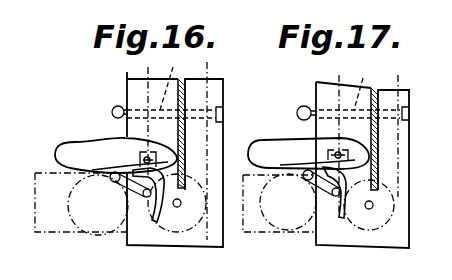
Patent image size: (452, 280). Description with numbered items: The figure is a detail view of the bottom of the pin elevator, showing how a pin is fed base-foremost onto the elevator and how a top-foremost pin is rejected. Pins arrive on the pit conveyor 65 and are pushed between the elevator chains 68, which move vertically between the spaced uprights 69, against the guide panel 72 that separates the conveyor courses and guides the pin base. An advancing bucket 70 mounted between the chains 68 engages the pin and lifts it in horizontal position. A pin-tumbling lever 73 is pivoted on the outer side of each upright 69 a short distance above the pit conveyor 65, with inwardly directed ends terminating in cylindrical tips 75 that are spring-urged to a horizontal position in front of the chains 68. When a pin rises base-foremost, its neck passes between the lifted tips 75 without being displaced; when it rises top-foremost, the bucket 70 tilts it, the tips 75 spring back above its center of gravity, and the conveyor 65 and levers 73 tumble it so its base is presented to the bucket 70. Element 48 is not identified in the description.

In FIG. 16, the pressure shoe 48 is at (118, 139).
In FIG. 17, the pressure shoe 48 is at (283, 138).
In FIG. 16, the pit conveyor chains 65 is at (69, 202).
In FIG. 17, the pit conveyor chains 65 is at (276, 203).
In FIG. 16, the elevator conveyor chains 68 is at (126, 80).
In FIG. 17, the elevator conveyor chains 68 is at (322, 86).
In FIG. 16, the upright members 69 is at (210, 93).
In FIG. 17, the upright members 69 is at (408, 95).
In FIG. 16, the pin-supporting bucket 70 is at (98, 205).
In FIG. 17, the pin-supporting bucket 70 is at (288, 202).
In FIG. 16, the guide panel 72 is at (185, 133).
In FIG. 17, the guide panel 72 is at (342, 162).
In FIG. 16, the pin-tumbling lever 73 is at (177, 79).
In FIG. 17, the pin-tumbling lever 73 is at (368, 85).
In FIG. 16, the cylindrical tip 75 is at (112, 112).
In FIG. 17, the cylindrical tip 75 is at (305, 106).